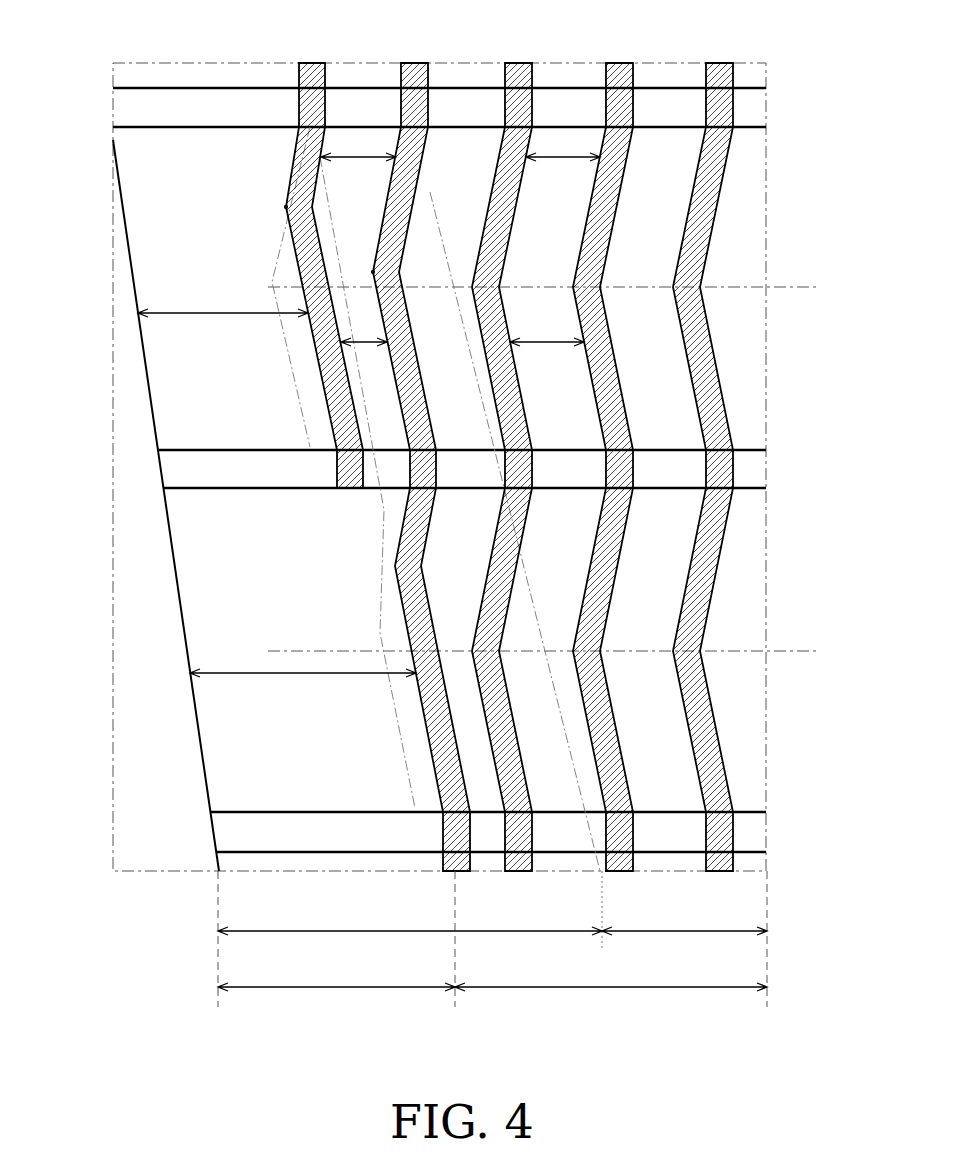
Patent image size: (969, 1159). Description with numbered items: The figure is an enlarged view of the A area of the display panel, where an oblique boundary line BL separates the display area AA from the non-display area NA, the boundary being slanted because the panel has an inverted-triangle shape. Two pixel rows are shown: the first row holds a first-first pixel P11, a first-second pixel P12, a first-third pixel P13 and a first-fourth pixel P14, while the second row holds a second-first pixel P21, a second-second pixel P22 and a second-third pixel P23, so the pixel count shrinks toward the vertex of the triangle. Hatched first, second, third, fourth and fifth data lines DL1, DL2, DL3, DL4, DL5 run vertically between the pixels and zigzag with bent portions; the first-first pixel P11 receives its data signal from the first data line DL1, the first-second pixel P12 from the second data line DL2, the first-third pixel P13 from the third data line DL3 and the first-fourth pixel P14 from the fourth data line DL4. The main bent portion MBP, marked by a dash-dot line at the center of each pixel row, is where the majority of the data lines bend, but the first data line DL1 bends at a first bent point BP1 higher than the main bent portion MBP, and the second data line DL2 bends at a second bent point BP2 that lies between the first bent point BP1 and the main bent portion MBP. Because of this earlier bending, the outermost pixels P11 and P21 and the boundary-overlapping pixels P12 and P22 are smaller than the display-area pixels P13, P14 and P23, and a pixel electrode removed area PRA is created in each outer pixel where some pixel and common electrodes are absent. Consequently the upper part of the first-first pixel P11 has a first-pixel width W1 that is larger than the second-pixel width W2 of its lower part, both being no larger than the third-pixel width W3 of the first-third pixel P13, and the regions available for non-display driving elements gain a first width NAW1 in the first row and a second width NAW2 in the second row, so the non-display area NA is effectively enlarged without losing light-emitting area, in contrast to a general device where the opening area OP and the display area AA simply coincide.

The A area A is at (113, 63).
The first data line DL1 is at (310, 72).
The second data line DL2 is at (410, 72).
The third data line DL3 is at (513, 72).
The fourth data line DL4 is at (613, 72).
The fifth data line DL5 is at (715, 72).
The boundary line BL is at (430, 192).
The main bent portion MBP is at (569, 469).
The first bent point BP1 is at (286, 207).
The second bent point BP2 is at (373, 272).
The pixel electrode removed area PRA is at (303, 373).
The first-pixel width W1 is at (358, 146).
The second-pixel width W2 is at (364, 330).
The third-pixel width W3 is at (555, 239).
The first width NAW1 is at (223, 327).
The second width NAW2 is at (303, 688).
The first-first pixel P11 is at (352, 219).
The first-second pixel P12 is at (452, 219).
The first-third pixel P13 is at (550, 219).
The first-fourth pixel P14 is at (652, 219).
The second-first pixel P21 is at (457, 549).
The second-second pixel P22 is at (558, 549).
The second-third pixel P23 is at (658, 549).
The non-display area NA is at (410, 945).
The display area AA is at (684, 945).
The opening area OP is at (611, 1001).